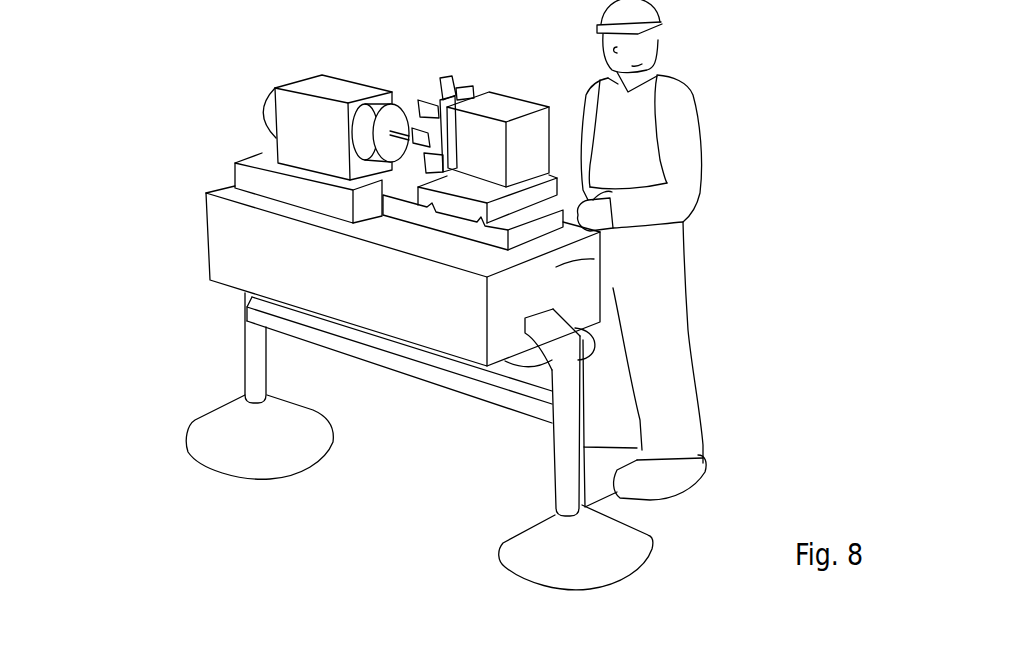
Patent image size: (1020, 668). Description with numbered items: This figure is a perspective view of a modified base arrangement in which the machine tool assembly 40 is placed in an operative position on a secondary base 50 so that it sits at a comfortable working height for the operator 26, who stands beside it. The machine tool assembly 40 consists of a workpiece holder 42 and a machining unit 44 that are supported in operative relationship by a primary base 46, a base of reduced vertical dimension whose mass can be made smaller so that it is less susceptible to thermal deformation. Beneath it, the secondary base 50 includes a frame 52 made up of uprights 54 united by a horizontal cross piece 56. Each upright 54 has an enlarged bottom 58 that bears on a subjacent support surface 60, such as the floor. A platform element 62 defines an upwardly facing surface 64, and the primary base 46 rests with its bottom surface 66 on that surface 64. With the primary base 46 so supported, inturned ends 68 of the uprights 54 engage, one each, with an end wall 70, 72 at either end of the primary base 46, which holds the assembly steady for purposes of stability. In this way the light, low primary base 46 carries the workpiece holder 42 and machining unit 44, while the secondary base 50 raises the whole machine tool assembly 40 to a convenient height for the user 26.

The operator 26 is at (688, 62).
The machine tool assembly 40 is at (187, 248).
The workpiece holder 42 is at (330, 57).
The machining unit 44 is at (497, 63).
The primary base 46 is at (403, 279).
The secondary base 50 is at (243, 330).
The frame 52 is at (420, 389).
The uprights 54 is at (252, 368).
The horizontal cross piece 56 is at (471, 393).
The enlarged bottom 58 is at (250, 463).
The subjacent support surface 60 is at (397, 528).
The platform element 62 is at (593, 358).
The upwardly facing surface 64 is at (575, 334).
The bottom surface 66 is at (533, 357).
The inturned ends 68 is at (596, 260).
The end wall 70 is at (560, 326).
The end wall 72 is at (204, 197).